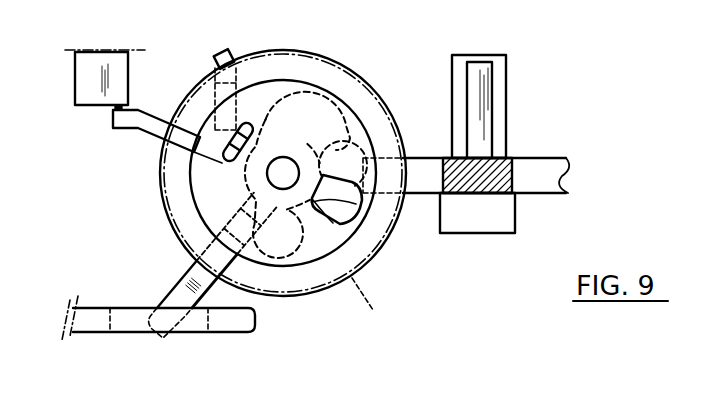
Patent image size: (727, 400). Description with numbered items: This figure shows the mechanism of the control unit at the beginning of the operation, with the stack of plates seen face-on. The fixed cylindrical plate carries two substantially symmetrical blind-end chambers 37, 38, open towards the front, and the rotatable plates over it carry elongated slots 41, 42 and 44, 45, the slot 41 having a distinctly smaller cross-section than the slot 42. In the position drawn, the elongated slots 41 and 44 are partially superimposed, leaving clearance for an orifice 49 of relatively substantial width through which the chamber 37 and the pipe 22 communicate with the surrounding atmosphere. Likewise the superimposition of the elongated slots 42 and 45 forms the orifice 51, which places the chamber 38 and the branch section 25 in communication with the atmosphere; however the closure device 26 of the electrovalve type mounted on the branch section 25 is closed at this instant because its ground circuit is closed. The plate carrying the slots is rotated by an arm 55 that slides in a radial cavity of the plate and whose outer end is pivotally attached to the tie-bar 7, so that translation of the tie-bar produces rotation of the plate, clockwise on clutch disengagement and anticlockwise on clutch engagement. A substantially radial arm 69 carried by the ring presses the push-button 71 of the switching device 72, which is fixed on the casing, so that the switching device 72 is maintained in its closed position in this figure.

The tie-bar 7 is at (98, 320).
The pipe 22 is at (203, 77).
The branch section 25 is at (532, 185).
The closure device 26 is at (510, 104).
The blind-end chamber 37 is at (171, 208).
The blind-end chamber 38 is at (313, 100).
The elongated slot 41 is at (186, 217).
The elongated slot 42 is at (378, 108).
The elongated slot 44 is at (250, 122).
The elongated slot 45 is at (325, 227).
The orifice 49 is at (222, 162).
The orifice 51 is at (360, 206).
The arm 55 is at (183, 291).
The radial arm 69 is at (146, 123).
The push-button 71 is at (112, 110).
The switching device 72 is at (80, 73).